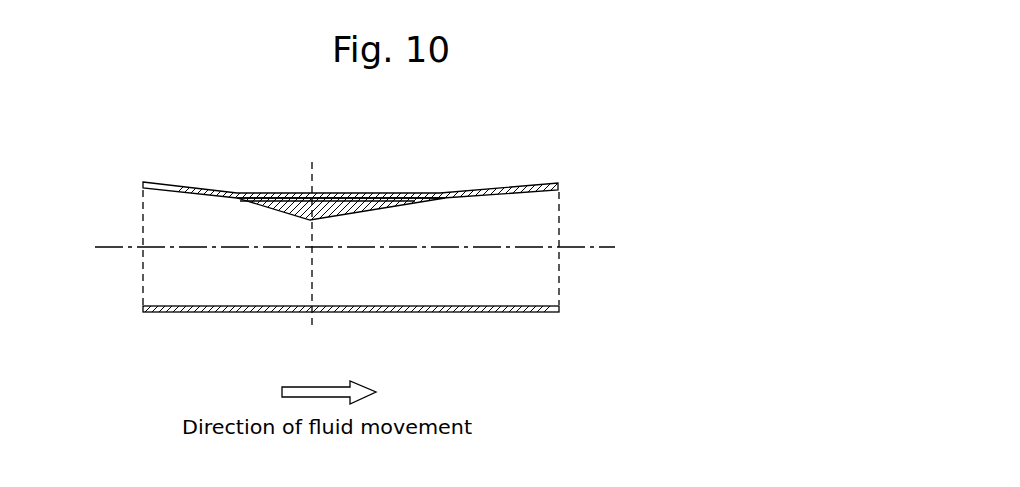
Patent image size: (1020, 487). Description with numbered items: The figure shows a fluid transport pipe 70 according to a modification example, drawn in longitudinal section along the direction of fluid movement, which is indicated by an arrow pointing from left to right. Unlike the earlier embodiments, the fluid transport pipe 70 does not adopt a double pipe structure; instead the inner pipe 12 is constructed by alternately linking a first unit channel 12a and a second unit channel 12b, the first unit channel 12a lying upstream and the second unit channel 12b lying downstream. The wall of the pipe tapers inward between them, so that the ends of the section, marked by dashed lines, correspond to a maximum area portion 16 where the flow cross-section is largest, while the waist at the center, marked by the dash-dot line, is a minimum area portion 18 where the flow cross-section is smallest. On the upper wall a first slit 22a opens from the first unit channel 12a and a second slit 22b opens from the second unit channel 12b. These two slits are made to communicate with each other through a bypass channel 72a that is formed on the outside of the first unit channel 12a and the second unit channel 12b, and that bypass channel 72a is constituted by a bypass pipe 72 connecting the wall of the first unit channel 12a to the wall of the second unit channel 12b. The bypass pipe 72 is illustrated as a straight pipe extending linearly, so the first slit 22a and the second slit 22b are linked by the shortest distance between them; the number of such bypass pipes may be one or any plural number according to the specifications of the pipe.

The fluid transport pipe 70 is at (580, 137).
The inner pipe 12 is at (547, 195).
The first unit channel 12a is at (207, 290).
The second unit channel 12b is at (455, 288).
The maximum area portion 16 is at (142, 229).
The minimum area portion 18 is at (310, 277).
The first slit 22a is at (252, 196).
The second slit 22b is at (418, 200).
The bypass pipe 72 is at (351, 194).
The bypass channel 72a is at (301, 202).